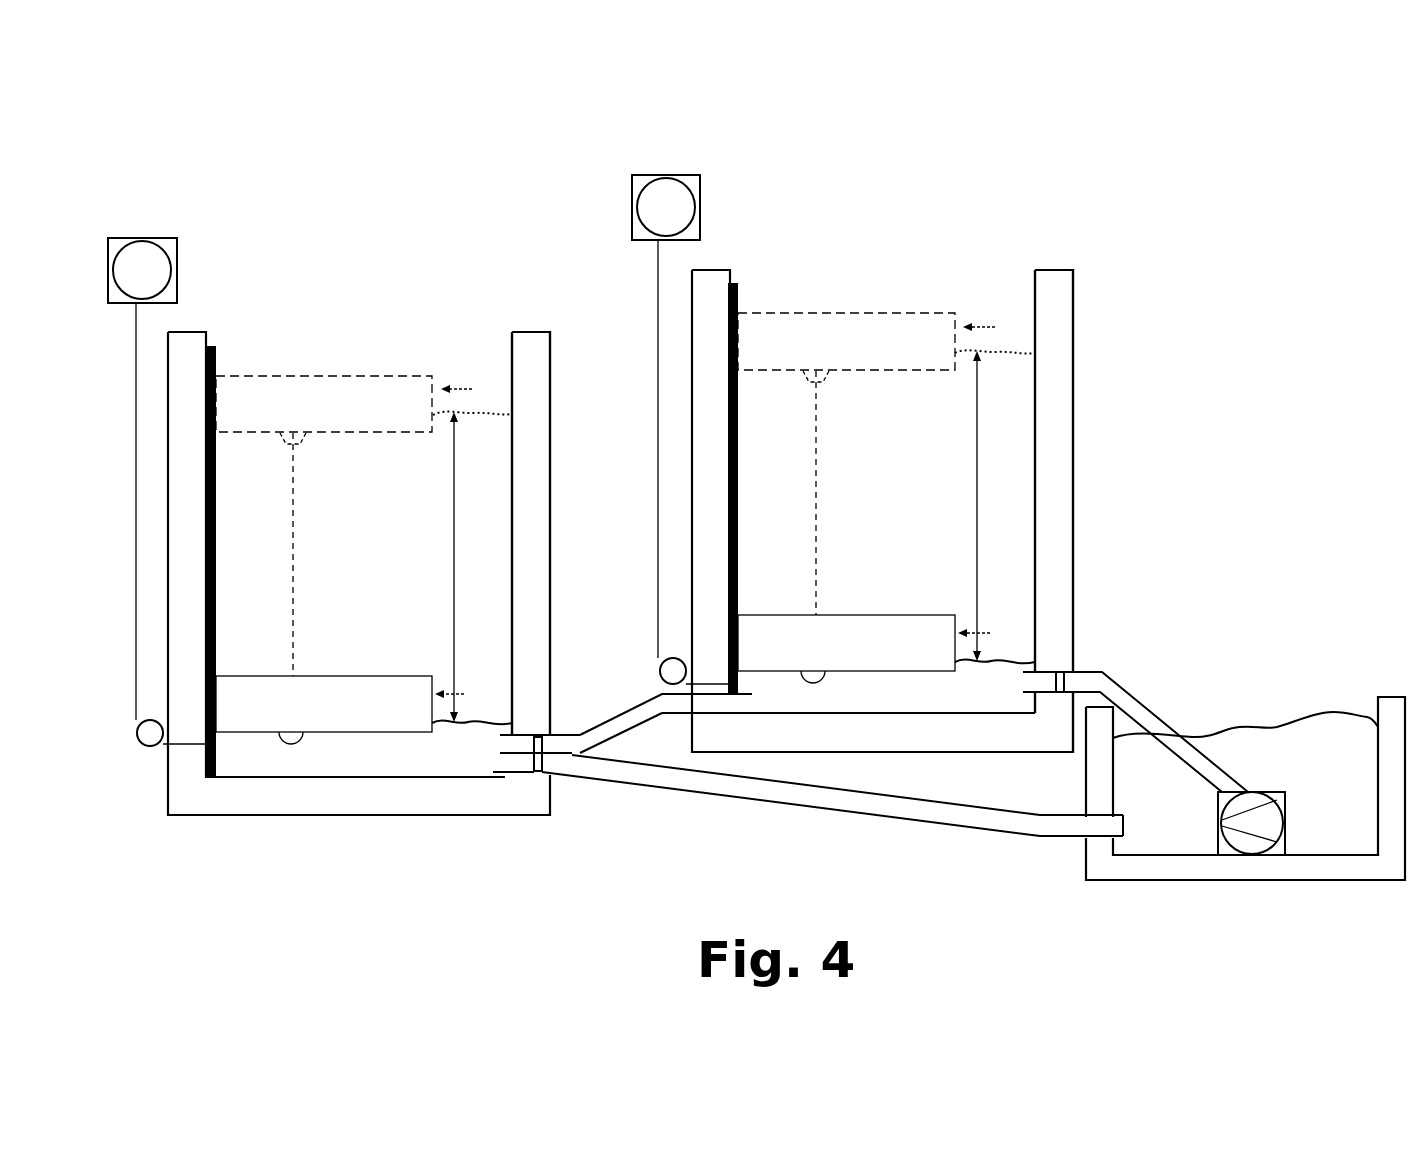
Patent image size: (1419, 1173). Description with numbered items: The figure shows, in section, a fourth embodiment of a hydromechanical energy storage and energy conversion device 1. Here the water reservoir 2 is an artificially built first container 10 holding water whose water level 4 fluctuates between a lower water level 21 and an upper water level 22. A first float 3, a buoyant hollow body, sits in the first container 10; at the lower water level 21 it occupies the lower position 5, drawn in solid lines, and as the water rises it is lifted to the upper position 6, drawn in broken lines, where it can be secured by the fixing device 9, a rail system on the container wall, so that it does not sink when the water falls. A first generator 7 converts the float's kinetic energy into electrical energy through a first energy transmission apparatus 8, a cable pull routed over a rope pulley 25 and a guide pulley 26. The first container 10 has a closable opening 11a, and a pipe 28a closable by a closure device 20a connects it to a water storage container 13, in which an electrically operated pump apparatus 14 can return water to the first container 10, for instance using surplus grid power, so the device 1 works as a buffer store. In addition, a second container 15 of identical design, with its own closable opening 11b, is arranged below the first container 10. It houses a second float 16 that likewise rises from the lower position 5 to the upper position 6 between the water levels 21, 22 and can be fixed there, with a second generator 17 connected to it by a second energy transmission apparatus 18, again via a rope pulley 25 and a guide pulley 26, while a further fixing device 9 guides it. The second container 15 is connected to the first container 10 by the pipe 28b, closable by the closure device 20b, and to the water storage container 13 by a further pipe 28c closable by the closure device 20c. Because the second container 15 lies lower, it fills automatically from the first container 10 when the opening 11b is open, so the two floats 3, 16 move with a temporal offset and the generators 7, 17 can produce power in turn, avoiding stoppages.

The hydromechanical energy storage and energy conversion device 1 is at (394, 109).
The water reservoir 2 is at (1100, 511).
The first float 3 is at (926, 313).
The water level 4 is at (453, 585).
The lower position 5 is at (722, 664).
The upper position 6 is at (728, 360).
The first generator 7 is at (700, 208).
The first energy transmission apparatus 8 is at (656, 480).
The fixing device 9 is at (216, 492).
The first container 10 is at (1074, 380).
The opening 11a is at (867, 514).
The opening 11b is at (359, 573).
The water storage container 13 is at (1086, 858).
The pump apparatus 14 is at (1286, 823).
The second container 15 is at (552, 442).
The second float 16 is at (404, 376).
The second generator 17 is at (178, 272).
The second energy transmission apparatus 18 is at (135, 540).
The closure device 20a is at (1070, 672).
The closure device 20b is at (542, 736).
The closure device 20c is at (550, 772).
The lower water level 21 is at (447, 730).
The upper water level 22 is at (485, 418).
The rope pulley 25 is at (300, 442).
The guide pulley 26 is at (150, 748).
The pipe 28a is at (1156, 712).
The pipe 28b is at (612, 716).
The pipe 28c is at (660, 792).